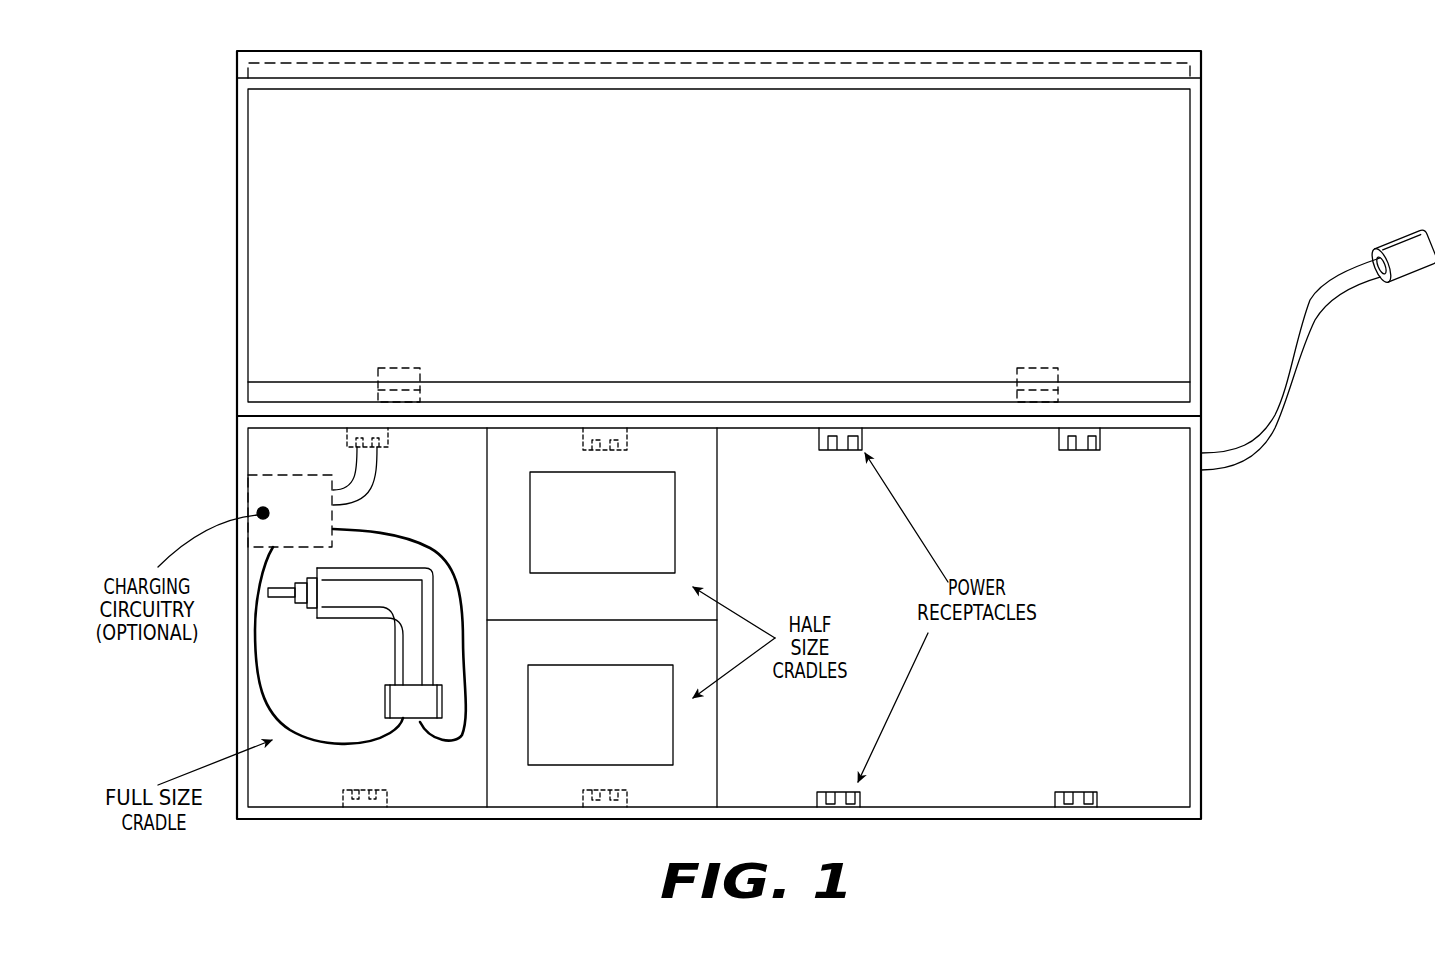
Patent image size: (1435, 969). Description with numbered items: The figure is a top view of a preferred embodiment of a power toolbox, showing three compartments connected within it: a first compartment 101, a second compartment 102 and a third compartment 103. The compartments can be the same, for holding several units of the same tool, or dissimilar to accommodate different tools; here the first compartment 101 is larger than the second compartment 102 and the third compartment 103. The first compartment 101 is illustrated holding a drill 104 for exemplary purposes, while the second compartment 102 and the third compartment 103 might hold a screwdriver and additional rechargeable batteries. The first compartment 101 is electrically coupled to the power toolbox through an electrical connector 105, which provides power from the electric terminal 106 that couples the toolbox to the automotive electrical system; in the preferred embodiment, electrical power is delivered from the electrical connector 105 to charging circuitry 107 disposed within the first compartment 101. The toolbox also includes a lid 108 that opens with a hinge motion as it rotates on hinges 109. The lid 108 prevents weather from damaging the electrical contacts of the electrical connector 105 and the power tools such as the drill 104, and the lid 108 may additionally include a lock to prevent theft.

The first compartment 101 is at (447, 787).
The second compartment 102 is at (552, 797).
The third compartment 103 is at (688, 435).
The drill 104 is at (355, 590).
The electrical connector 105 is at (363, 417).
The electric terminal 106 is at (1397, 265).
The charging circuitry 107 is at (260, 487).
The lid 108 is at (273, 82).
The hinges 109 is at (417, 365).